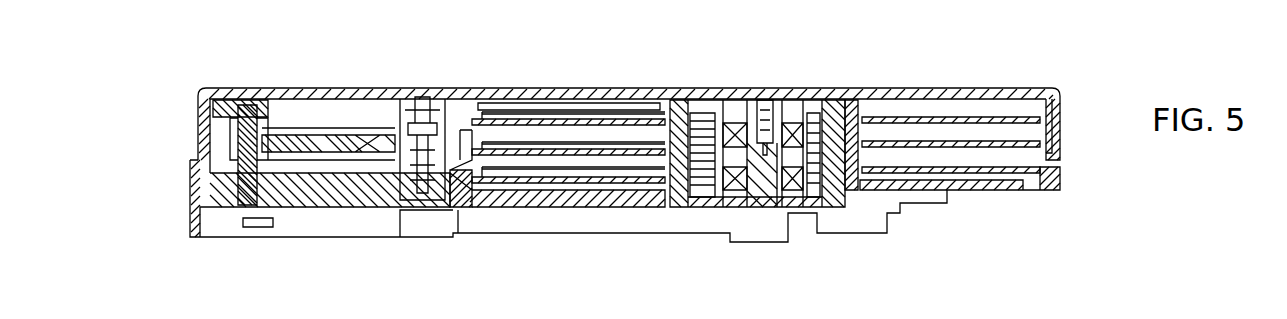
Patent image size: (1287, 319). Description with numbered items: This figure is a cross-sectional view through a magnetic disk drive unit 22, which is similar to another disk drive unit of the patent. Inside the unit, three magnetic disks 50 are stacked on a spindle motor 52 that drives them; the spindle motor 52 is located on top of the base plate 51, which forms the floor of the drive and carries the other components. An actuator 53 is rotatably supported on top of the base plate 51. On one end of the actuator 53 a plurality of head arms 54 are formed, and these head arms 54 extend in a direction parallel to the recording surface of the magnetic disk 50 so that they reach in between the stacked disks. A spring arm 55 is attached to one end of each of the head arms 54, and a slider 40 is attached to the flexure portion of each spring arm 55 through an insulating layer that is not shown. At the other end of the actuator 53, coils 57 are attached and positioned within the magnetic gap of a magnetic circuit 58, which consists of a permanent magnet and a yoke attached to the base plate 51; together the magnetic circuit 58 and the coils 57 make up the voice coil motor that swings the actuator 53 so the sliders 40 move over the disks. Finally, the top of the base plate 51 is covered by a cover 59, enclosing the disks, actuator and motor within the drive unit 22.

The magnetic disk drive unit 22 is at (1048, 79).
The slider 40 is at (648, 98).
The magnetic disks 50 is at (955, 117).
The base plate 51 is at (542, 200).
The spindle motor 52 is at (880, 100).
The actuator 53 is at (490, 193).
The head arms 54 is at (547, 133).
The spring arm 55 is at (617, 102).
The coils 57 is at (305, 143).
The magnetic circuit 58 is at (260, 86).
The cover 59 is at (447, 100).